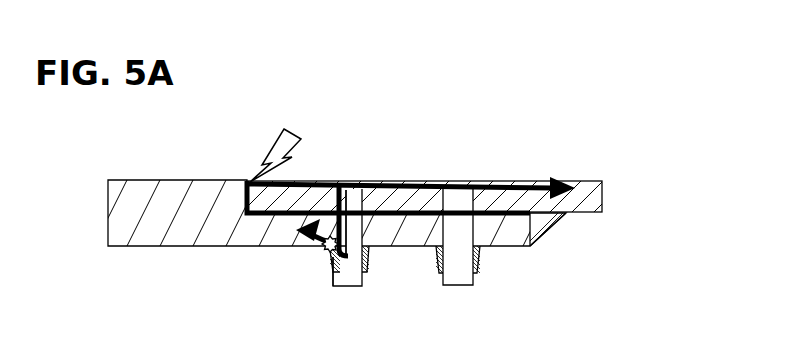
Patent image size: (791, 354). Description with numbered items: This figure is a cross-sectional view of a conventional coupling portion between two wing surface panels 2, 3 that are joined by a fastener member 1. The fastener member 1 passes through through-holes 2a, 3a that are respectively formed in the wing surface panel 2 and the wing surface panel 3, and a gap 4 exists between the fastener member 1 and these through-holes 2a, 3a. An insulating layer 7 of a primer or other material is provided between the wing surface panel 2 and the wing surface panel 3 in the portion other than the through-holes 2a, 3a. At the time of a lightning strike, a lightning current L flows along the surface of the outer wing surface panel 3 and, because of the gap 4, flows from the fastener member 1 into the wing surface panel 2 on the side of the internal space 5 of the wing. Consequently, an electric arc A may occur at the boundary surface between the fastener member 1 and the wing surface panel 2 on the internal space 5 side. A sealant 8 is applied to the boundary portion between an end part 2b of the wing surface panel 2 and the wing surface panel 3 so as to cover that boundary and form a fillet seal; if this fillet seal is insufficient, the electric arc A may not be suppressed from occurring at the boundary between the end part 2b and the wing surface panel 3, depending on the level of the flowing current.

The fastener member 1 is at (339, 182).
The wing surface panel 2 is at (168, 190).
The through-hole 2a is at (364, 238).
The end part 2b is at (555, 226).
The wing surface panel 3 is at (585, 184).
The through-hole 3a is at (356, 196).
The gap 4 is at (367, 230).
The internal space 5 is at (485, 315).
The insulating layer 7 is at (257, 217).
The sealant 8 is at (567, 215).
The lightning current L is at (419, 184).
The electric arc A is at (327, 256).